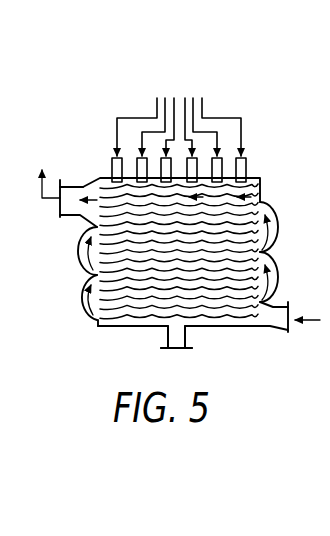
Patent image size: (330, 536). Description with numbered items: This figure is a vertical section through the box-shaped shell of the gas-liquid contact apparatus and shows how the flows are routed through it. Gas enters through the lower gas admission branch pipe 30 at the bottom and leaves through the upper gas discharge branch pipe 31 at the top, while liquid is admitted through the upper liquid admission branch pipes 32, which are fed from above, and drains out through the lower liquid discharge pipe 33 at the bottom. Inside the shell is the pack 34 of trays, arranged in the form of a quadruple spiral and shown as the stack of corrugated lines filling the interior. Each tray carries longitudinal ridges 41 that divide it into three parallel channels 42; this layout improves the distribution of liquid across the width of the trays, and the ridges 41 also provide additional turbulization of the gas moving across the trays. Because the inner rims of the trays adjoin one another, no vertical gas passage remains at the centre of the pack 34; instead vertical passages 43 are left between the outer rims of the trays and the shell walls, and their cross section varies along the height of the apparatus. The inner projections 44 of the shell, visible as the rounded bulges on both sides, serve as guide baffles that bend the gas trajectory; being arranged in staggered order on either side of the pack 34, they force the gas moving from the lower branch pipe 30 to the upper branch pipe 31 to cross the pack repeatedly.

The lower gas admission branch pipe 30 is at (287, 334).
The upper gas discharge branch pipe 31 is at (72, 217).
The upper liquid admission branch pipe 32 is at (112, 168).
The lower liquid discharge pipe 33 is at (176, 350).
The pack of trays 34 is at (250, 190).
The longitudinal ridge 41 is at (228, 321).
The parallel channel 42 is at (146, 327).
The passage 43 is at (277, 232).
The inner projection 44 is at (262, 252).